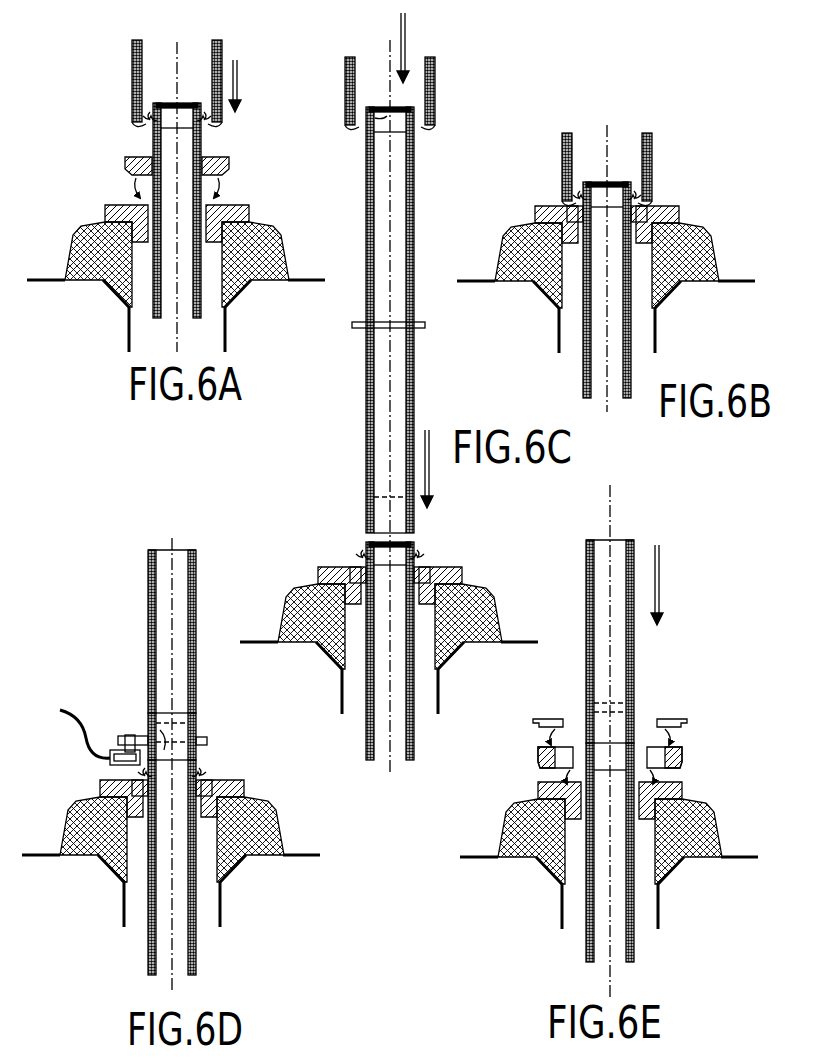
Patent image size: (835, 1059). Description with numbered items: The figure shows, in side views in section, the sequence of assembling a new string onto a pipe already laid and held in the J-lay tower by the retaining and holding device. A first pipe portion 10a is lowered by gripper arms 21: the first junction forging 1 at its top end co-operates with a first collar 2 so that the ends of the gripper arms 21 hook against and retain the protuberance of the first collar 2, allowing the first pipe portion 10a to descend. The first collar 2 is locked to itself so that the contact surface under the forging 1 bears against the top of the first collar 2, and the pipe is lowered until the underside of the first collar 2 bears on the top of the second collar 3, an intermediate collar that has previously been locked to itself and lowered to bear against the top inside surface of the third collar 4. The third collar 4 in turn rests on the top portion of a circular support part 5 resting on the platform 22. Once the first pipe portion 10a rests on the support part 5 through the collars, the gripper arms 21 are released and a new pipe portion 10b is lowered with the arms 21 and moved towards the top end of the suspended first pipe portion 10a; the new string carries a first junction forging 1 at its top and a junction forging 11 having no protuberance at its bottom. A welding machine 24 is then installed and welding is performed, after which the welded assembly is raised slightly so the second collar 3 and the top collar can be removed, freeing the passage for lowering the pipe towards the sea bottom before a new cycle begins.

In FIG. 6C, the first junction forging 1 is at (384, 116).
In FIG. 6A, the first collar 2 is at (148, 112).
In FIG. 6B, the first collar 2 is at (583, 192).
In FIG. 6C, the first collar 2 is at (370, 552).
In FIG. 6D, the first collar 2 is at (200, 776).
In FIG. 6E, the first collar 2 is at (686, 719).
In FIG. 6A, the second collar 3 is at (126, 161).
In FIG. 6B, the second collar 3 is at (568, 204).
In FIG. 6C, the second collar 3 is at (350, 566).
In FIG. 6D, the second collar 3 is at (210, 780).
In FIG. 6E, the second collar 3 is at (683, 754).
In FIG. 6A, the third collar 4 is at (106, 205).
In FIG. 6B, the third collar 4 is at (536, 210).
In FIG. 6C, the third collar 4 is at (318, 569).
In FIG. 6D, the third collar 4 is at (242, 786).
In FIG. 6E, the third collar 4 is at (683, 784).
In FIG. 6A, the circular support part 5 is at (66, 246).
In FIG. 6B, the circular support part 5 is at (502, 251).
In FIG. 6C, the circular support part 5 is at (282, 622).
In FIG. 6D, the circular support part 5 is at (276, 820).
In FIG. 6E, the circular support part 5 is at (717, 826).
In FIG. 6A, the first pipe portion 10a is at (201, 306).
In FIG. 6B, the first pipe portion 10a is at (583, 377).
In FIG. 6C, the first pipe portion 10a is at (367, 720).
In FIG. 6D, the first pipe portion 10a is at (141, 955).
In FIG. 6E, the first pipe portion 10a is at (578, 941).
In FIG. 6C, the new pipe portion 10b is at (413, 190).
In FIG. 6D, the new pipe portion 10b is at (148, 640).
In FIG. 6E, the new pipe portion 10b is at (586, 600).
In FIG. 6C, the junction forging having no protuberance 11 is at (366, 515).
In FIG. 6D, the junction forging having no protuberance 11 is at (154, 714).
In FIG. 6A, the gripper arms 21 is at (132, 80).
In FIG. 6B, the gripper arms 21 is at (652, 160).
In FIG. 6C, the gripper arms 21 is at (435, 83).
In FIG. 6A, the platform 22 is at (307, 280).
In FIG. 6B, the platform 22 is at (740, 280).
In FIG. 6C, the platform 22 is at (518, 640).
In FIG. 6D, the platform 22 is at (313, 853).
In FIG. 6E, the platform 22 is at (519, 642).
In FIG. 6D, the welding machine 24 is at (104, 742).